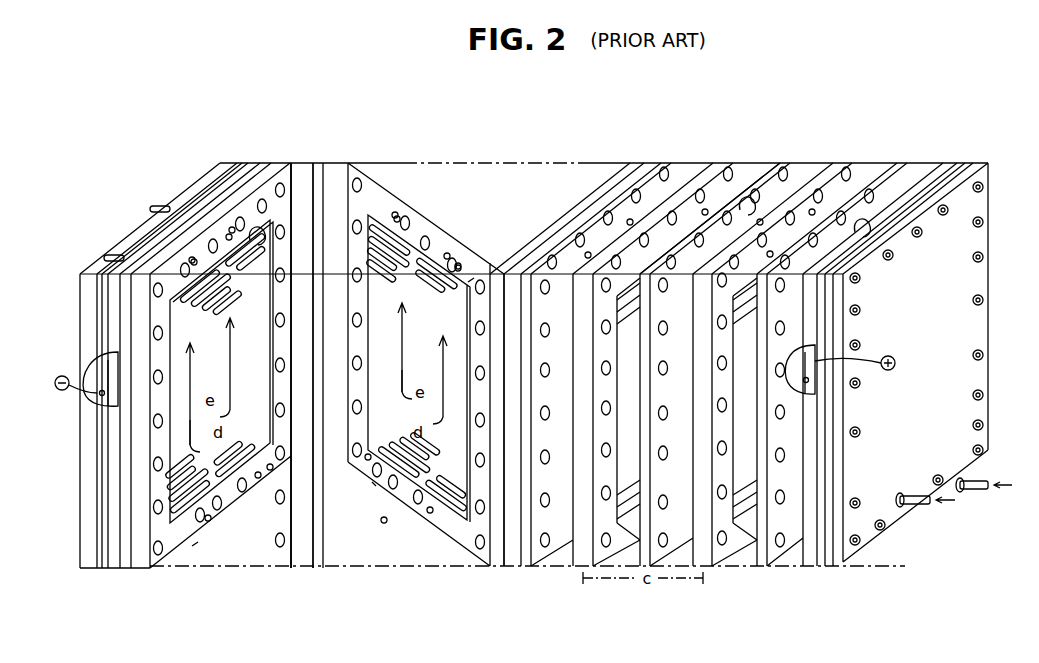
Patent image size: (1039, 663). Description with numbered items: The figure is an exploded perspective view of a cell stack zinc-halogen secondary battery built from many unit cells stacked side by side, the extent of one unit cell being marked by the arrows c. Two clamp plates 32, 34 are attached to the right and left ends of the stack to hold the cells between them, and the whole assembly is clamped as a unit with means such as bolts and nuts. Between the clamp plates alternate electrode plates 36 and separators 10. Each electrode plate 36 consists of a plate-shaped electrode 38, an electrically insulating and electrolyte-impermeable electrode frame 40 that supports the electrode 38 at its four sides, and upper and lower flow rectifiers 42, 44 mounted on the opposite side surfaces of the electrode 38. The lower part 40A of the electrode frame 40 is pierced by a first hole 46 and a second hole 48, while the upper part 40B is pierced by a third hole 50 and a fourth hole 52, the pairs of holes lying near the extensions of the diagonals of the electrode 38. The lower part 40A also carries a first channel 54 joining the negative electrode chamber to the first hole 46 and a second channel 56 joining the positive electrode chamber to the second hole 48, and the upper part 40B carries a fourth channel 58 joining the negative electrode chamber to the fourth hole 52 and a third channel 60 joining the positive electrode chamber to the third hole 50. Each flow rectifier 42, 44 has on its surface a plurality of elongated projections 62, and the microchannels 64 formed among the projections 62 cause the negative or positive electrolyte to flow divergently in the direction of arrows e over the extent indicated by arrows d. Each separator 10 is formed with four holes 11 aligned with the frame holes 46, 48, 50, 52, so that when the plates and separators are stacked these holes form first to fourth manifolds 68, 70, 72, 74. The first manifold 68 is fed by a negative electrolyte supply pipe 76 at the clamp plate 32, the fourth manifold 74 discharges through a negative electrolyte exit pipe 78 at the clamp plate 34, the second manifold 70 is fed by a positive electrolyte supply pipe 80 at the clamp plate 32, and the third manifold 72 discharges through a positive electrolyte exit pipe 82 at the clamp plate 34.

The separator 10 is at (124, 570).
The holes 11 is at (640, 200).
The clamp plate 32 is at (836, 565).
The clamp plate 34 is at (86, 570).
The electrode plate 36 is at (111, 572).
The plate-shaped electrode 38 is at (251, 368).
The electrode frame 40 is at (334, 186).
The lower part of the electrode frame 40A is at (165, 560).
The upper part of the electrode frame 40B is at (283, 185).
The upper flow rectifier 42 is at (315, 377).
The lower flow rectifier 44 is at (196, 492).
The first hole 46 is at (240, 494).
The second hole 48 is at (272, 470).
The third hole 50 is at (188, 262).
The fourth hole 52 is at (224, 243).
The first channel 54 is at (196, 546).
The second channel 56 is at (373, 484).
The fourth channel 58 is at (255, 228).
The third channel 60 is at (470, 281).
The elongated projections 62 is at (202, 288).
The microchannels 64 is at (228, 272).
The first manifold 68 is at (208, 521).
The second manifold 70 is at (262, 478).
The third manifold 72 is at (194, 259).
The fourth manifold 74 is at (228, 234).
The negative electrolyte supply pipe 76 is at (915, 506).
The negative electrolyte exit pipe 78 is at (155, 207).
The positive electrolyte supply pipe 80 is at (976, 470).
The positive electrolyte exit pipe 82 is at (108, 256).